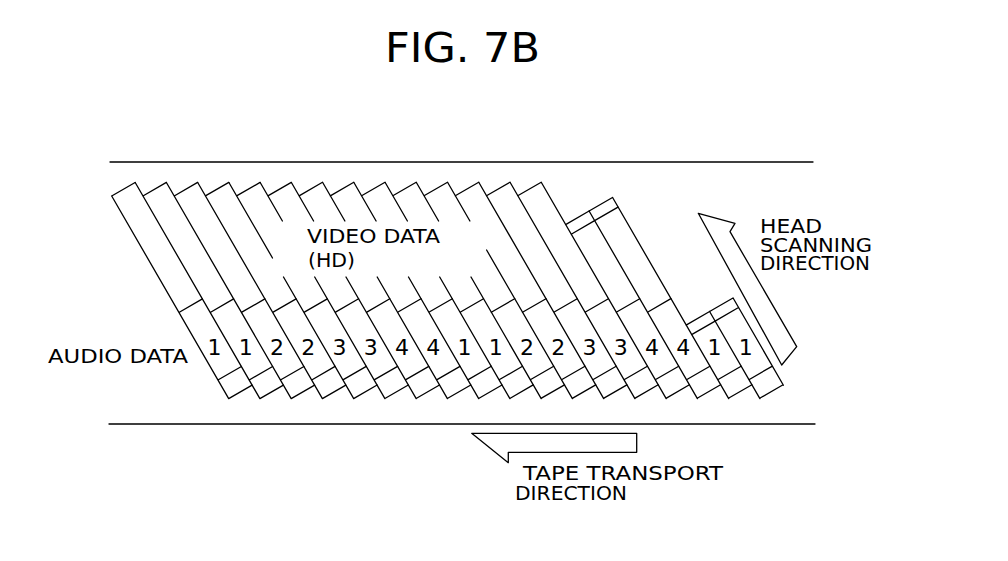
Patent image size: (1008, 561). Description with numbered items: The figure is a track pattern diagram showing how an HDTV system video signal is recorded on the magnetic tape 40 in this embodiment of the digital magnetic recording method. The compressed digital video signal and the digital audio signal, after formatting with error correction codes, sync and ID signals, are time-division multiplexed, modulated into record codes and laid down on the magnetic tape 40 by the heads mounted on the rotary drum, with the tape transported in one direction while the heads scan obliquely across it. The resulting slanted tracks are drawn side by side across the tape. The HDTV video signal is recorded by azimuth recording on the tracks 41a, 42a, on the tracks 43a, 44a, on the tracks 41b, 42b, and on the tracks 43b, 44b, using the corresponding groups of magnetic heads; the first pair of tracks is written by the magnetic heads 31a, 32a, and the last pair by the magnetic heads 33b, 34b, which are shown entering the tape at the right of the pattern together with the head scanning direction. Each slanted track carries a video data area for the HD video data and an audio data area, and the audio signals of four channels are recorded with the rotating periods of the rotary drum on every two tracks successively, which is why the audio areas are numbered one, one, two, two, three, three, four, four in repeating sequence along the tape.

The magnetic tape 40 is at (725, 162).
The track 41a is at (123, 189).
The track 42a is at (157, 188).
The track 43a is at (196, 184).
The track 44a is at (220, 188).
The track 41b is at (254, 187).
The track 42b is at (290, 185).
The track 43b is at (326, 188).
The track 44b is at (341, 189).
The magnetic head 33b is at (572, 222).
The magnetic head 34b is at (613, 199).
The magnetic head 31a is at (688, 325).
The magnetic head 32a is at (711, 311).